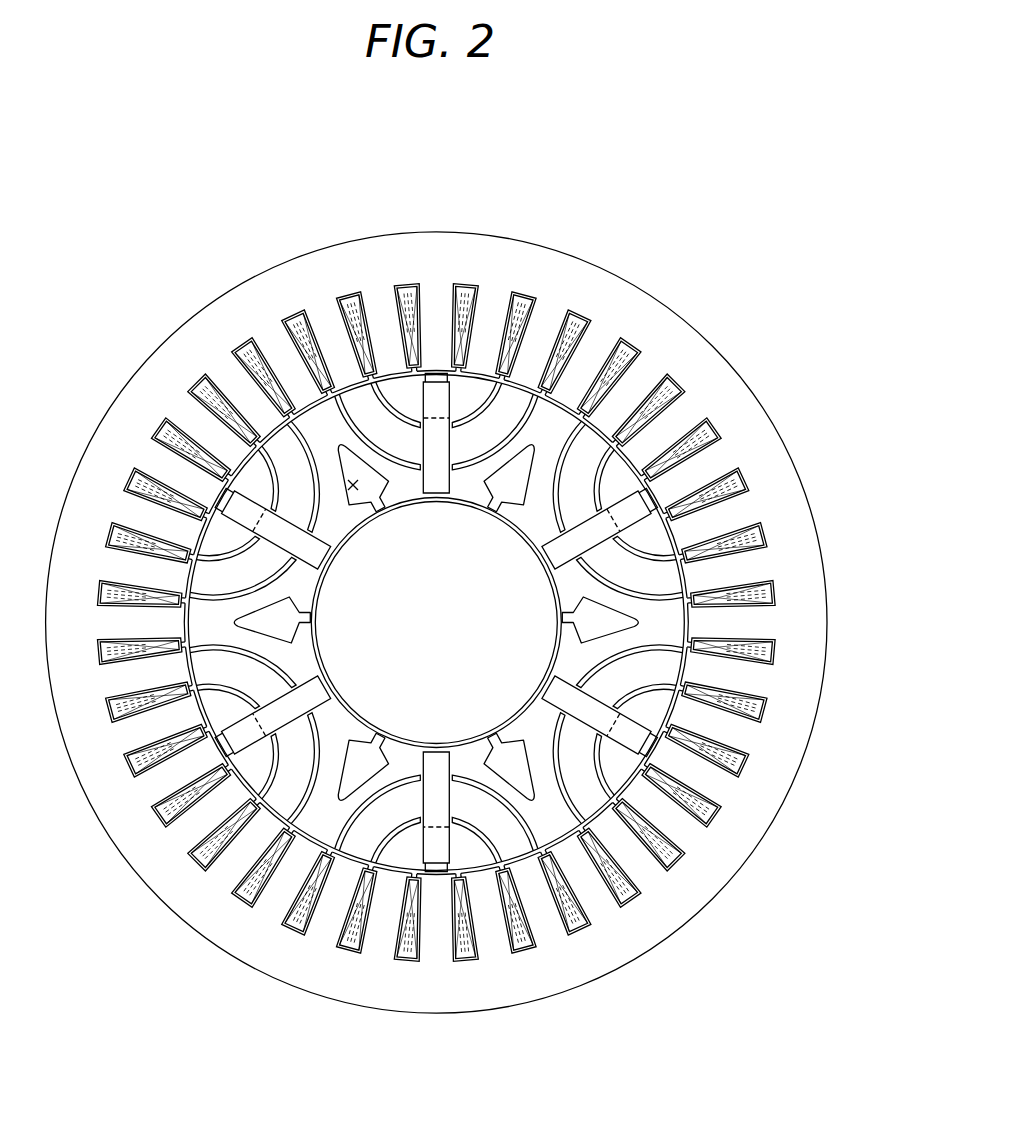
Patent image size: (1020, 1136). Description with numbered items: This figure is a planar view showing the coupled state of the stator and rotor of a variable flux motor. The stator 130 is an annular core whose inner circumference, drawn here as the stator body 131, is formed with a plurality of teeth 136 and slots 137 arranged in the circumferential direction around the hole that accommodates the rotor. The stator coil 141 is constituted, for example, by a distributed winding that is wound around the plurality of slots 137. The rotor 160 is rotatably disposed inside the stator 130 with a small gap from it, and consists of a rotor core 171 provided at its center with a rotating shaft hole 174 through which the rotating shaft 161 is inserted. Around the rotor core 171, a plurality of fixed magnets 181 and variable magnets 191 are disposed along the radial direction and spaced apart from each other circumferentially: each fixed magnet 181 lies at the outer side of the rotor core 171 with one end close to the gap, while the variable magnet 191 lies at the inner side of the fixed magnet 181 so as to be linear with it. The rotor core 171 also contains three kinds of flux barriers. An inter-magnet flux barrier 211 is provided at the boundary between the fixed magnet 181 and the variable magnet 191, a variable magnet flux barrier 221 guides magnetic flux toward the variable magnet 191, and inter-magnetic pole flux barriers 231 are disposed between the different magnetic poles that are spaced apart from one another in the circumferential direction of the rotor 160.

The stator 130 is at (462, 146).
The stator core 131 is at (309, 271).
The teeth 136 is at (330, 337).
The slots 137 is at (424, 288).
The stator coil 141 is at (291, 318).
The rotor 160 is at (518, 146).
The rotating shaft 161 is at (497, 566).
The rotor core 171 is at (553, 418).
The rotating shaft hole 174 is at (408, 737).
The fixed magnet 181 is at (436, 398).
The variable magnet 191 is at (436, 452).
The inter-magnet flux barrier 211 is at (352, 440).
The variable magnet flux barrier 221 is at (376, 395).
The inter-magnetic pole flux barriers 231 is at (374, 418).